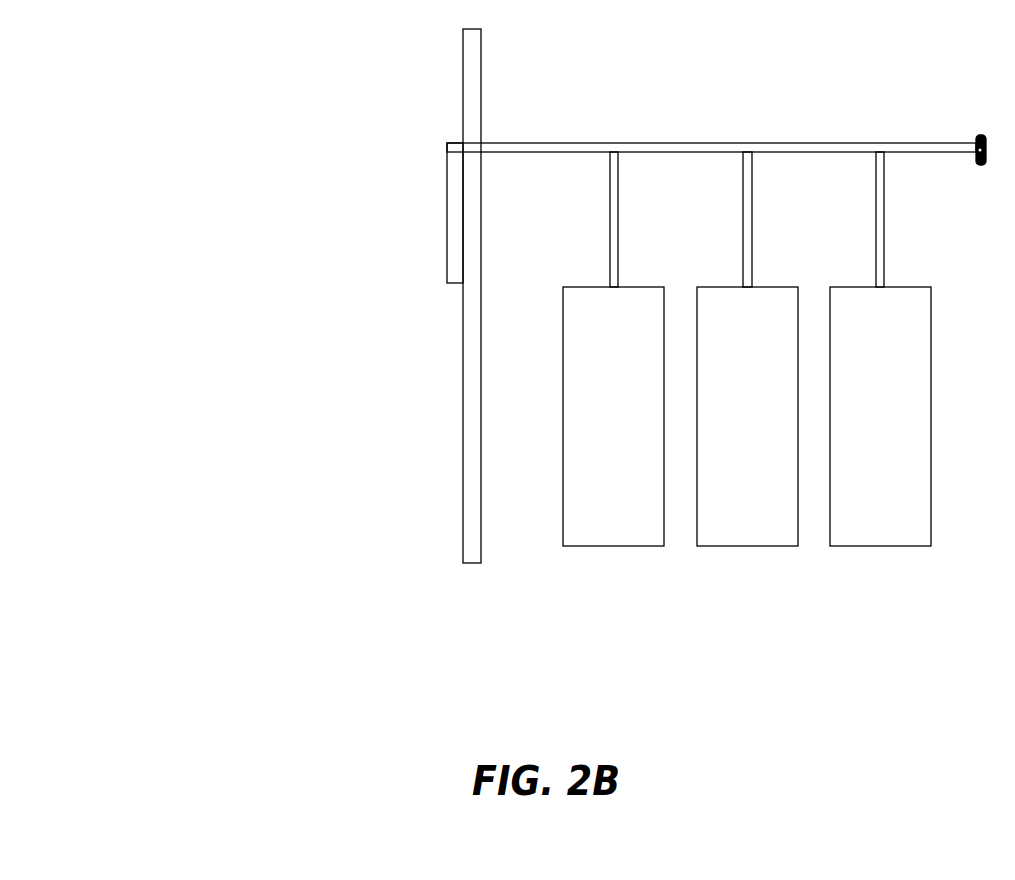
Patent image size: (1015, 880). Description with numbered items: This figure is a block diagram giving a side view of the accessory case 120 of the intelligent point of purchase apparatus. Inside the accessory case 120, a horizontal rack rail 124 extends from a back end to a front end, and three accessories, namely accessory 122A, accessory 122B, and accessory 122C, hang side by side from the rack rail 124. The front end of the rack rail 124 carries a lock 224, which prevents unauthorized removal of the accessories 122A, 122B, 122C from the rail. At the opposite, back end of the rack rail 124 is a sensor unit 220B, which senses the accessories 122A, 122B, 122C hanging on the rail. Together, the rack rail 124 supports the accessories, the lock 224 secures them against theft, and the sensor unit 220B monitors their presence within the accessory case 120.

The accessory case 120 is at (330, 371).
The sensor unit 220B is at (445, 180).
The rack rail 124 is at (803, 140).
The lock 224 is at (978, 137).
The accessory 122A is at (613, 547).
The accessory 122B is at (745, 547).
The accessory 122C is at (878, 547).